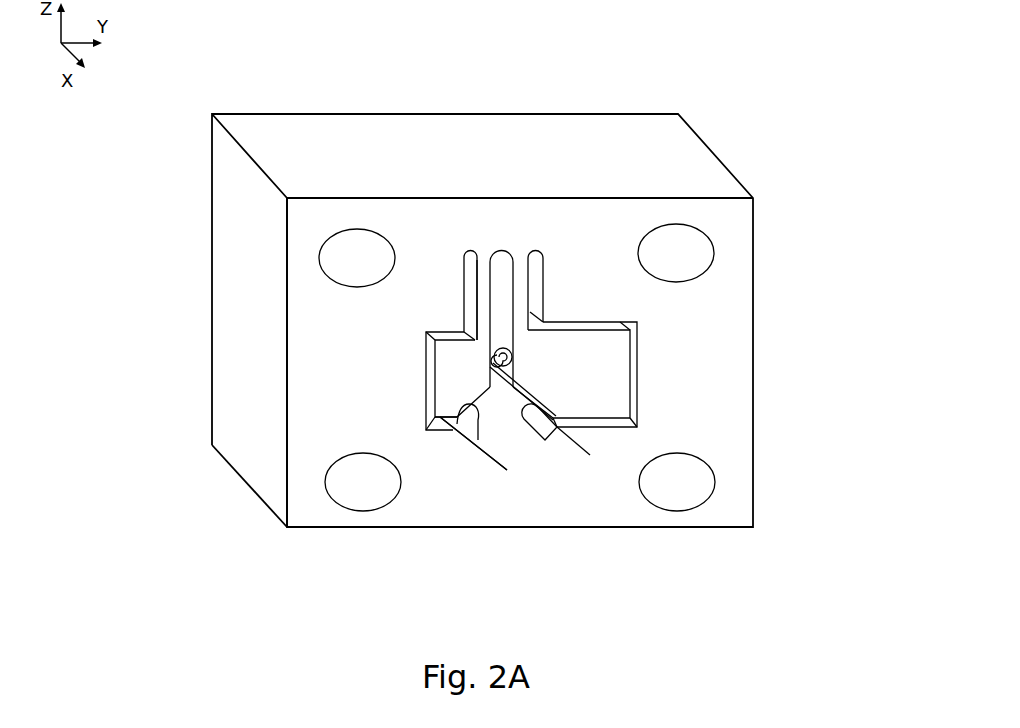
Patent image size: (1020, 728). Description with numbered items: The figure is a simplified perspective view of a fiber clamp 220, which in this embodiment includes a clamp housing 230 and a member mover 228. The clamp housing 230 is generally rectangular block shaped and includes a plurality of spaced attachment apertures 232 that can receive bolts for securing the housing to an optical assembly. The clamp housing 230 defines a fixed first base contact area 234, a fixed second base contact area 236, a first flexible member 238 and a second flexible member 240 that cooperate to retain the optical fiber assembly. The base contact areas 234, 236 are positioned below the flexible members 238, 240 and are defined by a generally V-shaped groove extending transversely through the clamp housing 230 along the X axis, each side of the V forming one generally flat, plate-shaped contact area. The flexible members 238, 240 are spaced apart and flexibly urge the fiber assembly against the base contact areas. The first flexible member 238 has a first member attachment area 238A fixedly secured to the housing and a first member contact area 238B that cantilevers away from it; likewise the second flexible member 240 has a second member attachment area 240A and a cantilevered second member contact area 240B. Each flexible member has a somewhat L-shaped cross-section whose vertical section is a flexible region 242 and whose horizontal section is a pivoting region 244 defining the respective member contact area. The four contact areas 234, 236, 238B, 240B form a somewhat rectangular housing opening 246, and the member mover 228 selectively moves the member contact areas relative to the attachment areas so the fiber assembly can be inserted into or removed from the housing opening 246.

The fiber clamp 220 is at (660, 88).
The clamp housing 230 is at (192, 103).
The attachment apertures 232 is at (348, 257).
The member mover 228 is at (502, 348).
The first base contact area 234 is at (523, 420).
The second base contact area 236 is at (475, 422).
The first flexible member 238 is at (647, 373).
The first member attachment area 238A is at (520, 253).
The first member contact area 238B is at (545, 428).
The second flexible member 240 is at (418, 375).
The second member attachment area 240A is at (481, 248).
The second member contact area 240B is at (477, 437).
The flexible region 242 is at (482, 295).
The pivoting region 244 is at (455, 390).
The housing opening 246 is at (512, 474).